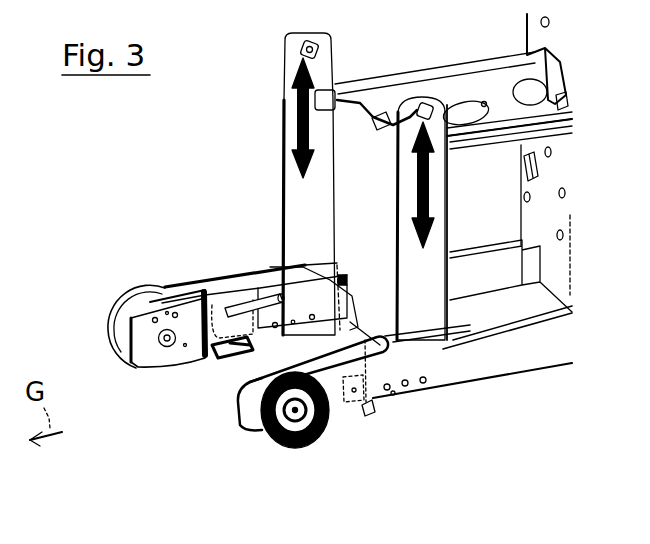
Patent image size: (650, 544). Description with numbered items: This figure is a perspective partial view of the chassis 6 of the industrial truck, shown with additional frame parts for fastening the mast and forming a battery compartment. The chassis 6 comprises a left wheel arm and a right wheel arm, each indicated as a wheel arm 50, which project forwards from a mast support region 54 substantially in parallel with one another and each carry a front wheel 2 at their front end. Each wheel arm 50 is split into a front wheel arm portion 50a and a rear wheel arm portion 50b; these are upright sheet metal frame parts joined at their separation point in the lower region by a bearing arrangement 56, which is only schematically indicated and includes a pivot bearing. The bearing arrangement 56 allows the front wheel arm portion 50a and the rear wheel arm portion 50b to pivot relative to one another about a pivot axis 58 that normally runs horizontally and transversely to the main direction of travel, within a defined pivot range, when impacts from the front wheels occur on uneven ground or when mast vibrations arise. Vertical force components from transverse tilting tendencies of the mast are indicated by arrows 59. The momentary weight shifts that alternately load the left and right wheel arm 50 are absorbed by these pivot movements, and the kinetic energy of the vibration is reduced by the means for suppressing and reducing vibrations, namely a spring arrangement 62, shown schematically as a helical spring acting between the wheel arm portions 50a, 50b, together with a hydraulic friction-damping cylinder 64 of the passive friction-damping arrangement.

The front wheel 2 is at (107, 317).
The chassis 6 is at (513, 366).
The wheel arm 50 is at (300, 272).
The front wheel arm portion 50a is at (187, 276).
The rear wheel arm portion 50b is at (300, 267).
The mast support region 54 is at (337, 272).
The bearing arrangement 56 is at (353, 492).
The pivot axis 58 is at (397, 407).
The arrows 59 is at (413, 190).
The spring arrangement 62 is at (207, 283).
The hydraulic friction-damping cylinder 64 is at (226, 292).